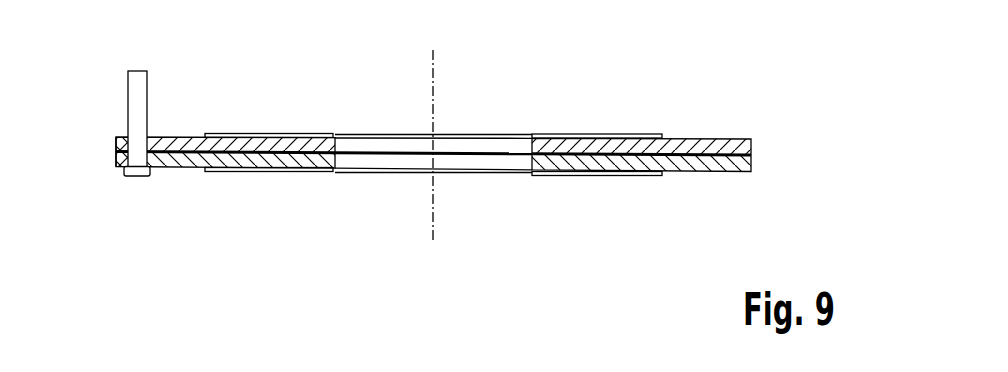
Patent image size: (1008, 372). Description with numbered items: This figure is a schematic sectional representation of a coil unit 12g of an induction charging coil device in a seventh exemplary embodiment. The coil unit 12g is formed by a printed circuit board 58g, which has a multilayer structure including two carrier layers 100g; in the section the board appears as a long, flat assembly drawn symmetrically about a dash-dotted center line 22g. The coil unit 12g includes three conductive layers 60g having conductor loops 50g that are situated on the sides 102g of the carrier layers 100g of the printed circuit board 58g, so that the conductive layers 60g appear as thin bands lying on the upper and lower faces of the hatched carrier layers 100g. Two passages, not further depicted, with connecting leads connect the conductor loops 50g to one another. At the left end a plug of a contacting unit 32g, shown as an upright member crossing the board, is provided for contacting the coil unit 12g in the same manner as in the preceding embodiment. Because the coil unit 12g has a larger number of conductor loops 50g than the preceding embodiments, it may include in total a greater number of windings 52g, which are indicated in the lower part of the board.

The coil unit 12g is at (484, 132).
The printed circuit board 58g is at (805, 118).
The center axis 22g is at (433, 58).
The contacting unit 32g is at (143, 97).
The conductor loops 50g is at (303, 170).
The windings 52g is at (257, 120).
The conductive layers 60g is at (615, 150).
The carrier layers 100g is at (120, 136).
The sides 102g is at (558, 122).